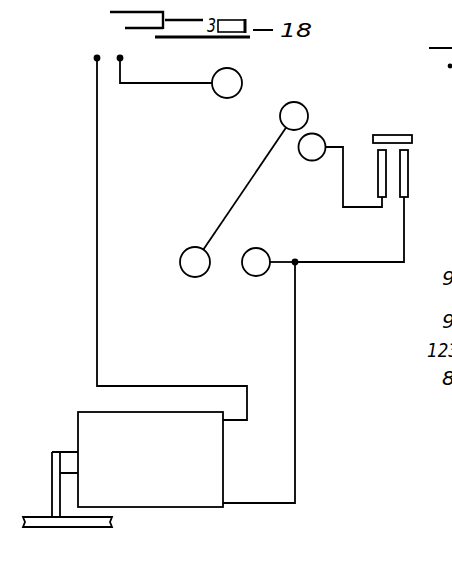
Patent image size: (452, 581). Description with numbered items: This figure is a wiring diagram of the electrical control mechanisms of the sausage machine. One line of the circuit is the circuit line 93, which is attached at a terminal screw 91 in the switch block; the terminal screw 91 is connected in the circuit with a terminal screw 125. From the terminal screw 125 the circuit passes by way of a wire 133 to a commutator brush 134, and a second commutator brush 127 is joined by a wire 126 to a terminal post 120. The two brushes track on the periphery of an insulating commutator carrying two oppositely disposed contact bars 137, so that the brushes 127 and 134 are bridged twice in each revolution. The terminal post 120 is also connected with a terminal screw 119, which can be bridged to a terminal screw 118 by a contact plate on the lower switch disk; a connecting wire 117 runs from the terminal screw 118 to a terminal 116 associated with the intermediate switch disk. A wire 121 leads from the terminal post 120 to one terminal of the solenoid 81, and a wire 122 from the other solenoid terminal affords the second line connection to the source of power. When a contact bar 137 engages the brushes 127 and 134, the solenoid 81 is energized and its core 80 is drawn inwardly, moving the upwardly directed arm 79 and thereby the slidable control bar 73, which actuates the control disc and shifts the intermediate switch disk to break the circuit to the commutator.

The slidable control bar 73 is at (45, 527).
The upwardly directed arm 79 is at (55, 482).
The core 80 is at (72, 450).
The solenoid 81 is at (150, 459).
The terminal screw 91 is at (232, 80).
The circuit line 93 is at (138, 84).
The terminal 116 is at (299, 112).
The connecting wire 117 is at (238, 199).
The terminal screw 118 is at (188, 264).
The terminal screw 119 is at (252, 270).
The terminal post 120 is at (298, 265).
The wire 121 is at (297, 410).
The wire 122 is at (97, 250).
The terminal screw 125 is at (317, 143).
The wire 126 is at (378, 262).
The commutator brush 127 is at (409, 172).
The wire 133 is at (343, 178).
The commutator brush 134 is at (378, 172).
The contact bars 137 is at (393, 135).